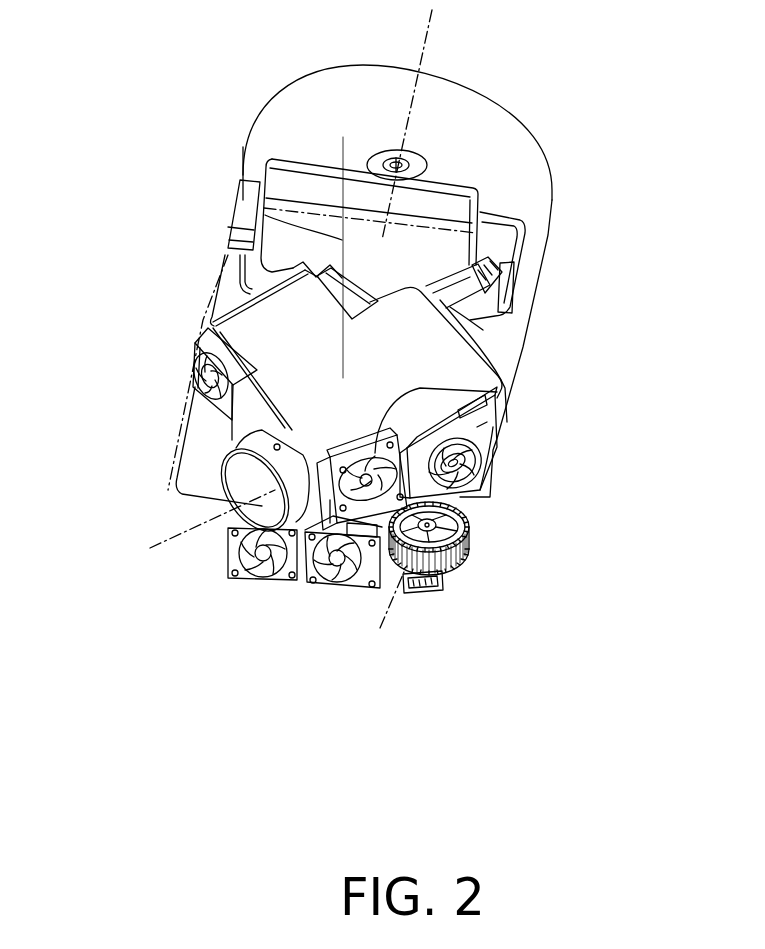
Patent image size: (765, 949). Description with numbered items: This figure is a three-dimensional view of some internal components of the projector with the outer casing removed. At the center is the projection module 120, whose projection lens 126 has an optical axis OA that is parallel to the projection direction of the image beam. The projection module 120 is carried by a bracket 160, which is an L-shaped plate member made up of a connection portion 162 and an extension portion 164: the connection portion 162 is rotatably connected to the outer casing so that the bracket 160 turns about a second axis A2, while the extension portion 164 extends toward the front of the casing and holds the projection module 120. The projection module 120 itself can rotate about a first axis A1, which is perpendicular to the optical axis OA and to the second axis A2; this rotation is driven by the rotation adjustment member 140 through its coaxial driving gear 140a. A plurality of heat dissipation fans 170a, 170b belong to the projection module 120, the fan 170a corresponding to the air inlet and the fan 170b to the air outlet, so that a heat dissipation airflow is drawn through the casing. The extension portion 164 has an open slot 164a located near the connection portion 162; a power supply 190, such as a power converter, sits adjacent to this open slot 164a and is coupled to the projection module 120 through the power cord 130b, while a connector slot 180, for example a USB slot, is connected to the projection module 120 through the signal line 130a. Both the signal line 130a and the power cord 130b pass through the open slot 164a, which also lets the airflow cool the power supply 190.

The projection module 120 is at (234, 301).
The projection lens 126 is at (247, 477).
The signal line 130a is at (505, 292).
The power cord 130b is at (508, 263).
The rotation adjustment member 140 is at (470, 545).
The driving gear 140a is at (378, 615).
The bracket 160 is at (423, 285).
The connection portion 162 is at (533, 170).
The extension portion 164 is at (547, 222).
The open slot 164a is at (476, 321).
The heat dissipation fan 170a is at (212, 336).
The heat dissipation fan 170b is at (325, 585).
The connector slot 180 is at (426, 593).
The power supply 190 is at (280, 177).
The first axis A1 is at (264, 208).
The second axis A2 is at (434, 21).
The optical axis OA is at (170, 533).